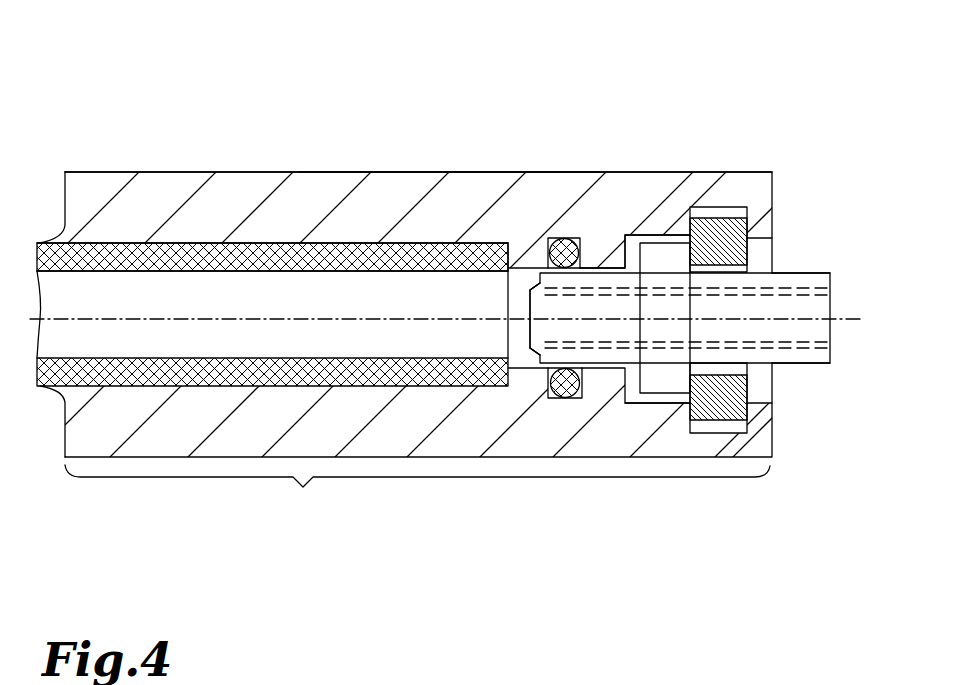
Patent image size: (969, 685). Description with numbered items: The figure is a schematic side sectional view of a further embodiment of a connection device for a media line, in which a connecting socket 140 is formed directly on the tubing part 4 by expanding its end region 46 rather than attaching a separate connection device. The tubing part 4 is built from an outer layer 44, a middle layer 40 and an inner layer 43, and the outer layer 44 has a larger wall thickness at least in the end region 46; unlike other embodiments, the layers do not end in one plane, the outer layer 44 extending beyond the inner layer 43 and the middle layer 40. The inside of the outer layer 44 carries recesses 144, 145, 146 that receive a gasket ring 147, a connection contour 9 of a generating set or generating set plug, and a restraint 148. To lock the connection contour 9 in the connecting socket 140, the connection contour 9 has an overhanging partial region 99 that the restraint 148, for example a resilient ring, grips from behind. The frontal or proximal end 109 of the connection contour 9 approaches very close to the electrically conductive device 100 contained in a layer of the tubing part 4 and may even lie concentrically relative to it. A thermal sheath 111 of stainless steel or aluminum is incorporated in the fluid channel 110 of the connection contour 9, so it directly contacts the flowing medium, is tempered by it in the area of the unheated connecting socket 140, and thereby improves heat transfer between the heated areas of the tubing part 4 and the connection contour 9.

The tubing part 4 is at (137, 160).
The connection contour 9 is at (770, 275).
The middle layer 40 is at (320, 243).
The inner layer 43 is at (380, 243).
The outer layer 44 is at (535, 188).
The end region 46 is at (303, 494).
The overhanging partial region 99 is at (663, 387).
The electrically conductive device 100 is at (251, 236).
The frontal or proximal end 109 is at (533, 270).
The fluid channel 110 is at (820, 303).
The thermal sheath 111 is at (823, 349).
The connecting socket 140 is at (440, 178).
The recess 144 is at (572, 240).
The recess 145 is at (668, 237).
The recess 146 is at (727, 208).
The gasket ring 147 is at (585, 250).
The restraint 148 is at (748, 230).